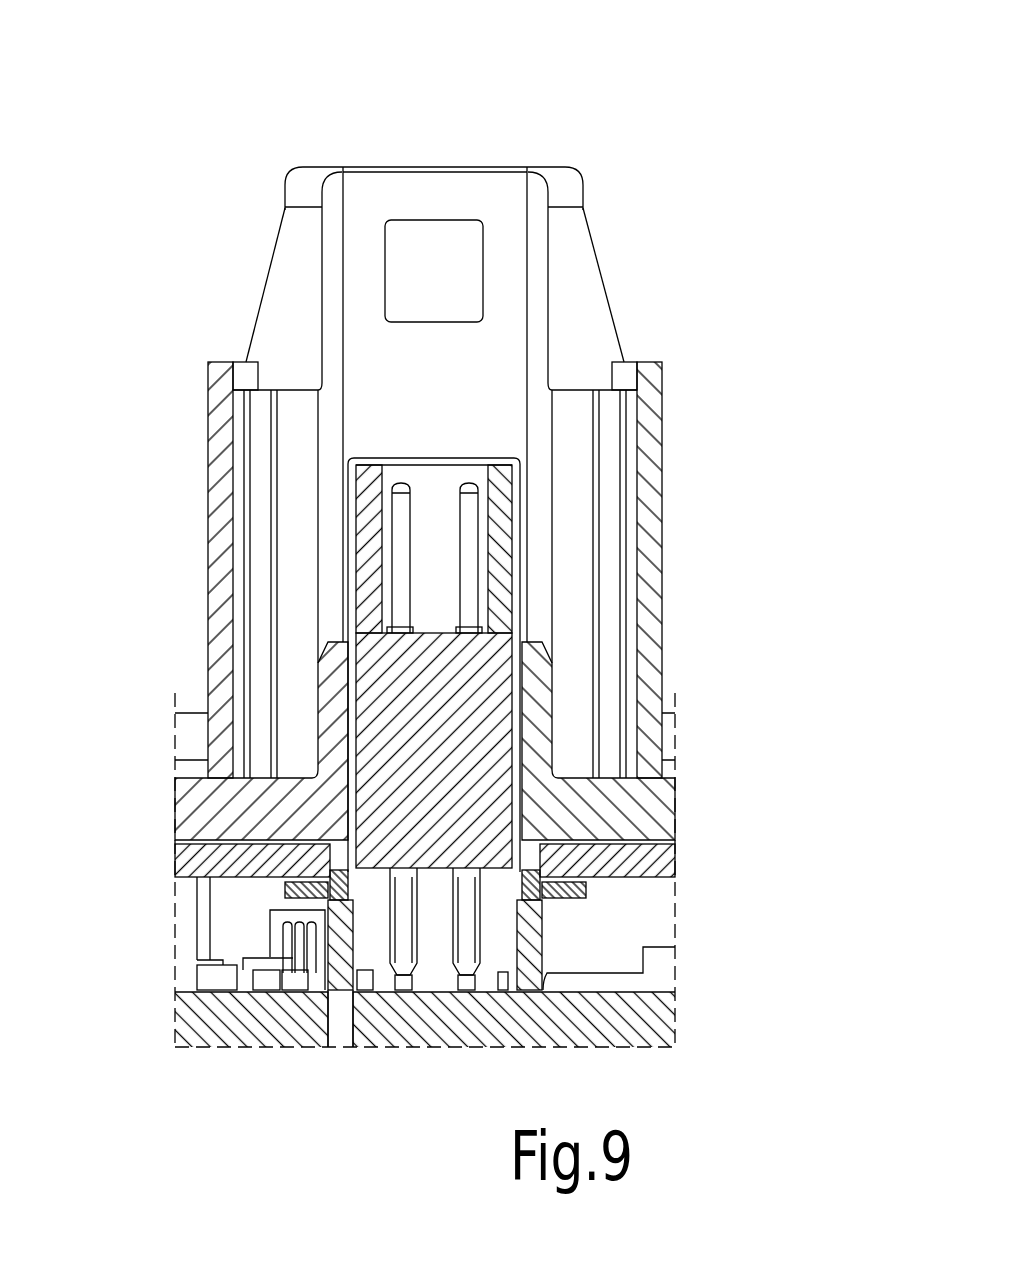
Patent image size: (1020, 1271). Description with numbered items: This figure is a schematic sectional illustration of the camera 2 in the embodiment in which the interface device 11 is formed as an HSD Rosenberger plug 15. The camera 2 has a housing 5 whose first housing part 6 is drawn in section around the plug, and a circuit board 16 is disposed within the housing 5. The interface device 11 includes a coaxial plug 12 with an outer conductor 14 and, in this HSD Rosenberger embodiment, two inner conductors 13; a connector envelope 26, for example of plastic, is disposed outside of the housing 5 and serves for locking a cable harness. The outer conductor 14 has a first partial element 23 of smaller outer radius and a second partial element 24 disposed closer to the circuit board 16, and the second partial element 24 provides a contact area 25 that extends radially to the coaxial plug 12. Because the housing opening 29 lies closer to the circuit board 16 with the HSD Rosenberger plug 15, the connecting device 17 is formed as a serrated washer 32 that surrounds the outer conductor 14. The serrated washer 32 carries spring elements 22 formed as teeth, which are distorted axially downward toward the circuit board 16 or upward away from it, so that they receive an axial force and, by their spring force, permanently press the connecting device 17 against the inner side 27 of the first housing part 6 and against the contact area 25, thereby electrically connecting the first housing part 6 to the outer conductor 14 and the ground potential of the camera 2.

The camera 2 is at (387, 1072).
The housing 5 is at (712, 688).
The first housing part 6 is at (552, 887).
The interface device 11 is at (505, 133).
The coaxial plug 12 is at (455, 452).
The inner conductor 13 is at (397, 557).
The outer conductor 14 is at (517, 737).
The HSD Rosenberger plug 15 is at (382, 125).
The circuit board 16 is at (197, 1017).
The connecting device 17 is at (587, 905).
The spring element 22 is at (347, 900).
The first partial element 23 is at (527, 590).
The second partial element 24 is at (557, 947).
The contact area 25 is at (545, 878).
The connector envelope 26 is at (575, 258).
The inner side 27 is at (185, 878).
The housing opening 29 is at (333, 831).
The serrated washer 32 is at (657, 850).